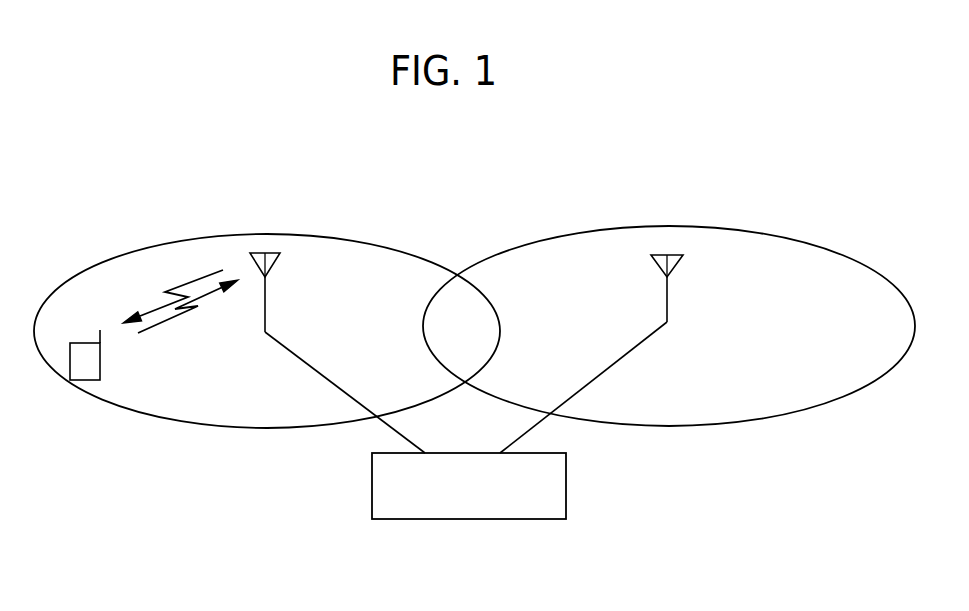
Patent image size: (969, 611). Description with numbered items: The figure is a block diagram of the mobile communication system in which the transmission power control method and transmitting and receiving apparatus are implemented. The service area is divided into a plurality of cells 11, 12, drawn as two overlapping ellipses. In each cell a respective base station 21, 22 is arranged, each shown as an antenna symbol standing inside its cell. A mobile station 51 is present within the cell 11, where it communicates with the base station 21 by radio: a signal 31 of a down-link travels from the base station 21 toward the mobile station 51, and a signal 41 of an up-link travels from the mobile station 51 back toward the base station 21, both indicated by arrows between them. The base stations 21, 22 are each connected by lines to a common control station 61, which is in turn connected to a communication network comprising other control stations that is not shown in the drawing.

The cell 11 is at (330, 235).
The cell 12 is at (733, 228).
The base station 21 is at (266, 302).
The base station 22 is at (668, 312).
The signal of a down-link 31 is at (153, 307).
The signal of an up-link 41 is at (152, 332).
The mobile station 51 is at (95, 402).
The control station 61 is at (402, 519).